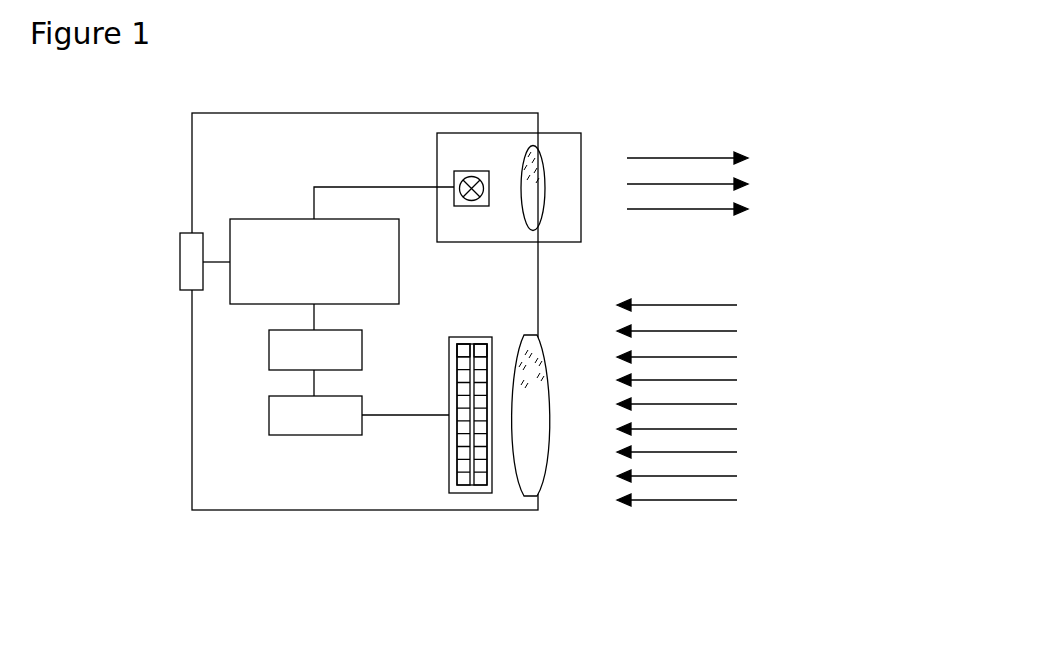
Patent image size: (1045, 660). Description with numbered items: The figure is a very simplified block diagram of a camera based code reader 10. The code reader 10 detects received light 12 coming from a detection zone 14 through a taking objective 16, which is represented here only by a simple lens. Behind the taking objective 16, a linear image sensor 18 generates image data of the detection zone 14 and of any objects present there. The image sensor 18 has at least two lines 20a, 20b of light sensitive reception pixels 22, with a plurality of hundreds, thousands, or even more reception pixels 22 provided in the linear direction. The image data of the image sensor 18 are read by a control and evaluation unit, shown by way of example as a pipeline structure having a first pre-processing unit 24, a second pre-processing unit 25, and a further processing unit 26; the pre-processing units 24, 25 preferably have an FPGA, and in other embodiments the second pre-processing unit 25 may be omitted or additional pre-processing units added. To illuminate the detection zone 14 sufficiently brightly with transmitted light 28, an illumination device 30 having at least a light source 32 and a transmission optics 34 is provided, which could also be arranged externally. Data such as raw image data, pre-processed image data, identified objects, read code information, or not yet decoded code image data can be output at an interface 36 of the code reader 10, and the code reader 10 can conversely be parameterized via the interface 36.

The camera based code reader 10 is at (333, 87).
The received light 12 is at (672, 513).
The detection zone 14 is at (897, 188).
The taking objective 16 is at (543, 460).
The linear image sensor 18 is at (449, 440).
The line of light sensitive reception pixels 20a is at (460, 481).
The line of light sensitive reception pixels 20b is at (482, 481).
The reception pixels 22 is at (463, 383).
The first pre-processing unit 24 is at (292, 350).
The second pre-processing unit 25 is at (312, 423).
The further processing unit 26 is at (292, 250).
The transmitted light 28 is at (673, 152).
The illumination device 30 is at (438, 133).
The light source 32 is at (467, 172).
The transmission optics 34 is at (543, 178).
The interface 36 is at (188, 252).